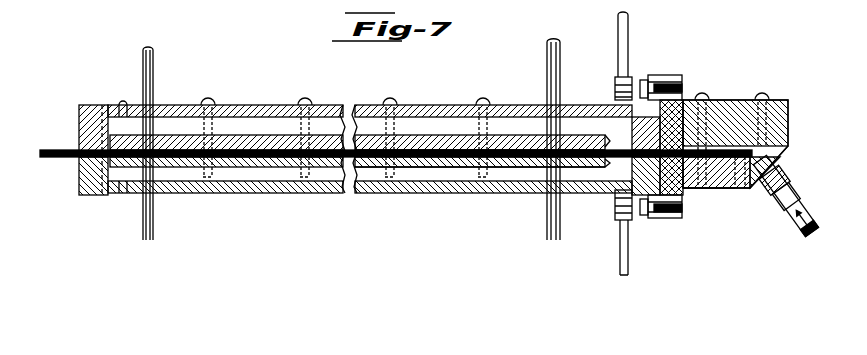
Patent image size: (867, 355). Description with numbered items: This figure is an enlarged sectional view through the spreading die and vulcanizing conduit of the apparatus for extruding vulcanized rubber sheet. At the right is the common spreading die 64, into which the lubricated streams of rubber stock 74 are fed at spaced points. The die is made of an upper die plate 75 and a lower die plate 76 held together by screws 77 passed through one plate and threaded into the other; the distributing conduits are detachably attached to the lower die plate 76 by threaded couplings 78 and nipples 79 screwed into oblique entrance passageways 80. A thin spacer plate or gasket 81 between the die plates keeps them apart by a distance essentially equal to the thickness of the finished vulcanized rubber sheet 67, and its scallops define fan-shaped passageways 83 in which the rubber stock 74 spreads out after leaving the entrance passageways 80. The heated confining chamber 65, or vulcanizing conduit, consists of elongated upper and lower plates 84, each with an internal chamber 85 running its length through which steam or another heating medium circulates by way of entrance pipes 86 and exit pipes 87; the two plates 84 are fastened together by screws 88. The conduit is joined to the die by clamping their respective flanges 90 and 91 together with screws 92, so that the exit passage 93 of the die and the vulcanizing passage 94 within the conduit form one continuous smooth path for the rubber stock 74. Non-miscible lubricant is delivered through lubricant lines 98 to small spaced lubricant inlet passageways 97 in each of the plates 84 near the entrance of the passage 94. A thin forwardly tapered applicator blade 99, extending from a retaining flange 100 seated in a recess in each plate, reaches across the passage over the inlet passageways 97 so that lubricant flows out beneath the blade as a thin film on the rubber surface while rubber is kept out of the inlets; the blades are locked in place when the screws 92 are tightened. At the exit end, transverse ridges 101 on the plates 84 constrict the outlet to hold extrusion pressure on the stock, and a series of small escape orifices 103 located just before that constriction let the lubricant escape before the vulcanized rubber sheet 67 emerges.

The common spreading die 64 is at (741, 98).
The heated confining chamber 65 is at (411, 102).
The vulcanized rubber sheet 67 is at (46, 160).
The lubricated streams of rubber stock 74 is at (745, 200).
The upper die plate 75 is at (725, 100).
The lower die plate 76 is at (703, 190).
The screws 77 is at (766, 98).
The threaded couplings 78 is at (790, 205).
The nipples 79 is at (772, 205).
The oblique entrance passageways 80 is at (786, 180).
The spacer plate or gasket 81 is at (786, 148).
The fan-shaped passageways 83 is at (722, 190).
The upper and lower plates 84 is at (258, 104).
The internal chamber 85 is at (326, 118).
The entrance pipes 86 is at (146, 52).
The exit pipes 87 is at (560, 48).
The screws 88 is at (210, 100).
The flange 90 is at (665, 75).
The flange 91 is at (680, 82).
The screws 92 is at (645, 80).
The exit passage 93 is at (690, 218).
The vulcanizing passage 94 is at (455, 152).
The lubricant inlet passageways 97 is at (626, 100).
The lubricant lines 98 is at (618, 42).
The applicator blade 99 is at (657, 147).
The retaining flanges 100 is at (702, 98).
The transverse ridges 101 is at (79, 140).
The escape orifices 103 is at (120, 104).